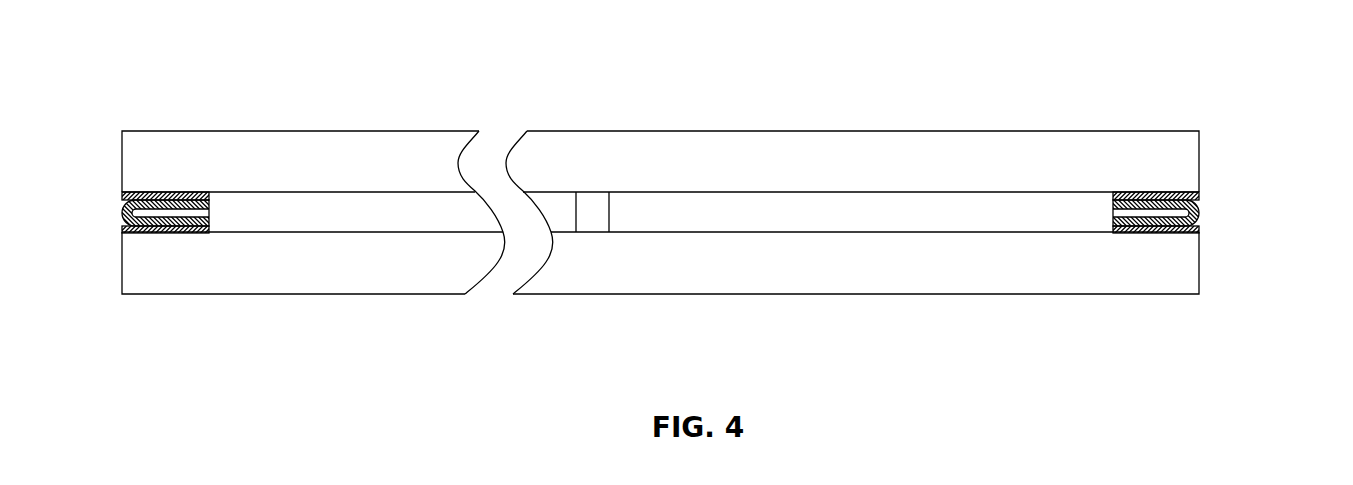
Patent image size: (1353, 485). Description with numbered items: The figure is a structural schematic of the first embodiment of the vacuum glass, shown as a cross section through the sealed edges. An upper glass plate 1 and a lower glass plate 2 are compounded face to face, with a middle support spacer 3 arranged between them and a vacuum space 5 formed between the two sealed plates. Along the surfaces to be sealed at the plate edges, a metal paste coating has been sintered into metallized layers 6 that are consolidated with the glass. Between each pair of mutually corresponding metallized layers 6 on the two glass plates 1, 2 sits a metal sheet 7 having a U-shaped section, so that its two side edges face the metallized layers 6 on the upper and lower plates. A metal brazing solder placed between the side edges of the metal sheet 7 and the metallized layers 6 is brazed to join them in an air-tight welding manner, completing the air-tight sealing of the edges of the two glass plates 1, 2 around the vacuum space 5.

The upper glass plate 1 is at (732, 165).
The lower glass plate 2 is at (810, 263).
The middle support spacer 3 is at (587, 216).
The vacuum space 5 is at (939, 215).
The metallized layers 6 is at (1200, 197).
The metal sheet 7 is at (1200, 213).